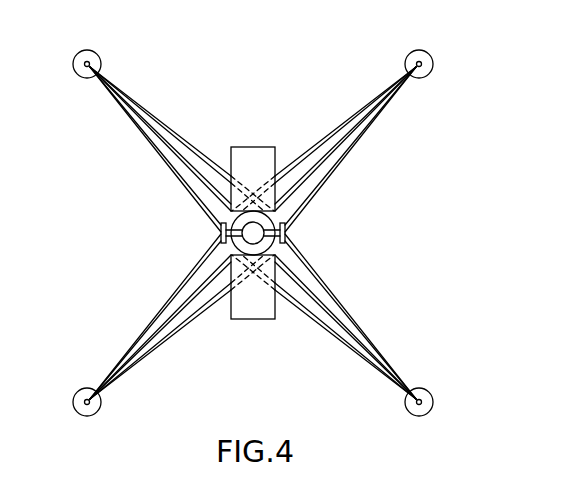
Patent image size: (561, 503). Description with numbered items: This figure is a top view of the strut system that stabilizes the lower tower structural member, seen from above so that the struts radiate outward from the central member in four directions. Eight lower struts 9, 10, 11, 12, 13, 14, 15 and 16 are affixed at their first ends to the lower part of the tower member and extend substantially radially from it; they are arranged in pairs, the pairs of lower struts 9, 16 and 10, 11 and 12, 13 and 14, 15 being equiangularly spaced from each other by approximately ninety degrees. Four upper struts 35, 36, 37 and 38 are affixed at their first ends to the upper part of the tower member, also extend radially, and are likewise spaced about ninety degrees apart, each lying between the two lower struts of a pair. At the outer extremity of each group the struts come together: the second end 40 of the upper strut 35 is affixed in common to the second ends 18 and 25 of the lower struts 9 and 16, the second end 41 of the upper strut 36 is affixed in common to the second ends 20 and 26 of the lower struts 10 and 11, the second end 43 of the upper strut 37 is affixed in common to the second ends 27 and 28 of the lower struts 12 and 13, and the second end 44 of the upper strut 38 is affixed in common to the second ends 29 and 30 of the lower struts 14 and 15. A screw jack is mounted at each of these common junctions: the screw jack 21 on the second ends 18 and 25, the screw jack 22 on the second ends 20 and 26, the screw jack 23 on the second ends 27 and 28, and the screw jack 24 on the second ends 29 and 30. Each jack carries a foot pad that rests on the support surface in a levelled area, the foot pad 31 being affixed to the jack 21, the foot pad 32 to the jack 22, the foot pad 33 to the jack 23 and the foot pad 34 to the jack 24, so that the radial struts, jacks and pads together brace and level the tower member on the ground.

The lower strut 9 is at (163, 161).
The lower strut 10 is at (175, 290).
The lower strut 11 is at (173, 337).
The lower strut 12 is at (325, 325).
The lower strut 13 is at (338, 305).
The lower strut 14 is at (345, 162).
The lower strut 15 is at (316, 156).
The lower strut 16 is at (185, 146).
The second end of lower strut 9 18 is at (118, 110).
The second end of lower strut 10 20 is at (127, 351).
The screw jack 21 is at (96, 54).
The screw jack 22 is at (72, 400).
The screw jack 23 is at (428, 393).
The screw jack 24 is at (425, 76).
The second end of lower strut 16 25 is at (123, 103).
The second end of lower strut 11 26 is at (133, 366).
The second end of lower strut 12 27 is at (375, 365).
The second end of lower strut 13 28 is at (383, 357).
The second end of lower strut 14 29 is at (390, 110).
The second end of lower strut 15 30 is at (372, 106).
The foot pad 31 is at (77, 52).
The foot pad 32 is at (90, 417).
The foot pad 33 is at (426, 410).
The foot pad 34 is at (427, 54).
The upper strut 35 is at (191, 178).
The upper strut 36 is at (198, 293).
The upper strut 37 is at (307, 283).
The upper strut 38 is at (305, 185).
The second end of upper strut 35 40 is at (143, 118).
The second end of upper strut 36 41 is at (140, 350).
The second end of upper strut 37 43 is at (370, 352).
The second end of upper strut 38 44 is at (371, 110).